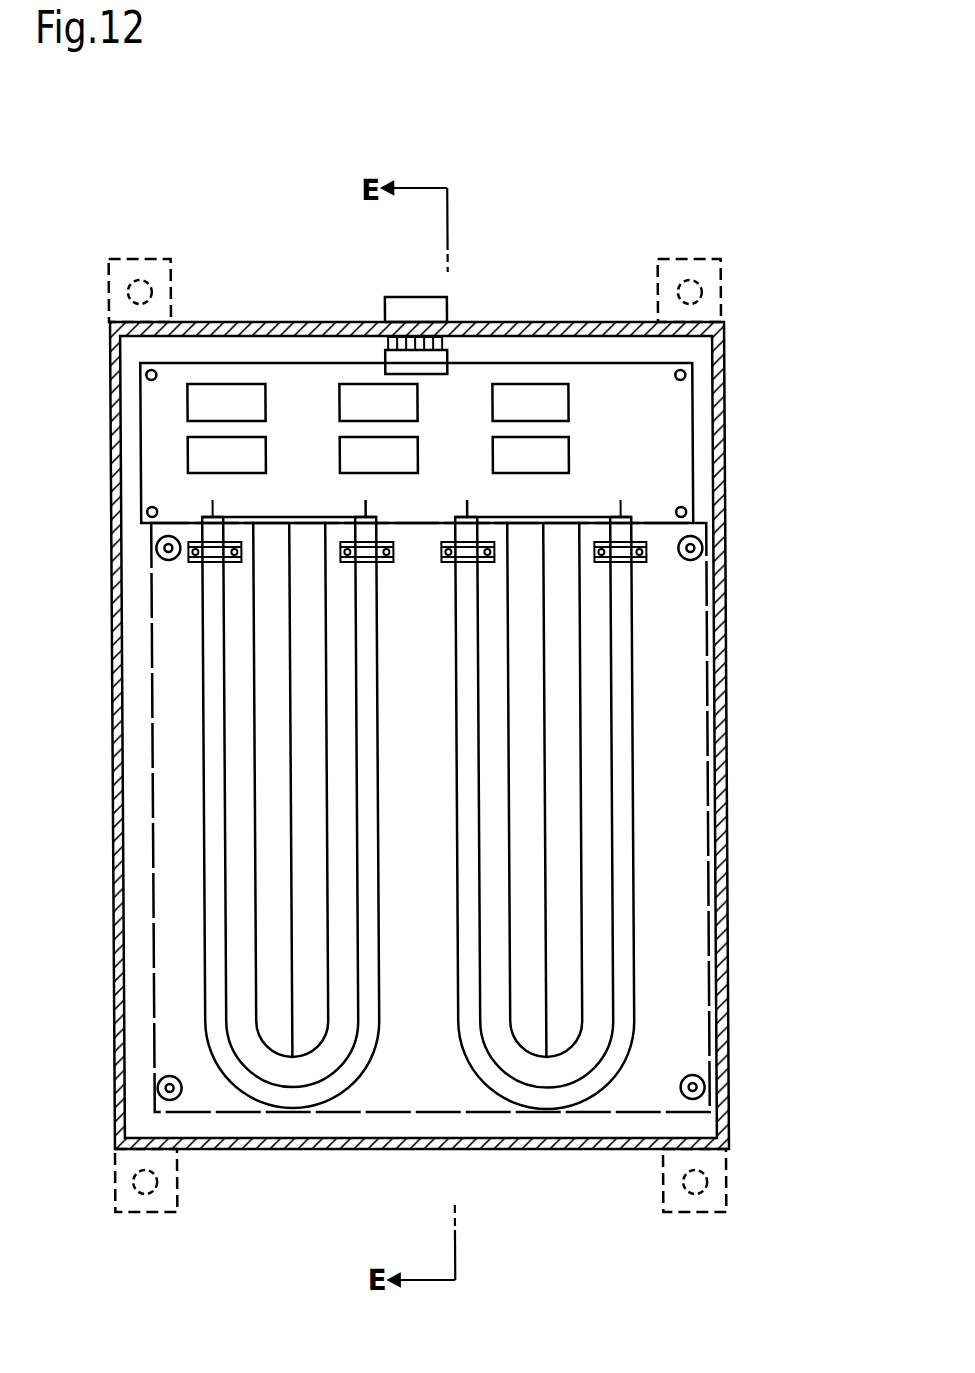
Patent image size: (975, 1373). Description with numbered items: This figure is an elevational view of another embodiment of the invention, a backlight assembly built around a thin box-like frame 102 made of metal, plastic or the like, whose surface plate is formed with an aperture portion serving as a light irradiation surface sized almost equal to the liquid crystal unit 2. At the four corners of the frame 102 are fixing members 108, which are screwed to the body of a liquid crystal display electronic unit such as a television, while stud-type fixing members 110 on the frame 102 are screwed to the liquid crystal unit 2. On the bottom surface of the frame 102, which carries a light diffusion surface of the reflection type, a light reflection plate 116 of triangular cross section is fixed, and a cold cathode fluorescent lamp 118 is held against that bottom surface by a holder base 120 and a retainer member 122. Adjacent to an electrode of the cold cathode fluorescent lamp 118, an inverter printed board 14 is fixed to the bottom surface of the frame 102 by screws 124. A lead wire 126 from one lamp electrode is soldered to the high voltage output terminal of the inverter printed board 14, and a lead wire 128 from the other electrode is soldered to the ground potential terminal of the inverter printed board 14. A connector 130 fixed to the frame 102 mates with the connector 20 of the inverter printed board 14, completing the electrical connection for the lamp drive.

The liquid crystal unit 2 is at (572, 1112).
The inverter printed board 14 is at (612, 377).
The connector of the inverter printed board 20 is at (388, 352).
The frame 102 is at (723, 950).
The fixing member 108 is at (157, 262).
The fixing member 110 is at (697, 550).
The light reflection plate 116 is at (565, 752).
The cold cathode fluorescent lamp 118 is at (622, 860).
The holder base 120 is at (642, 563).
The retainer member 122 is at (642, 523).
The screw 124 is at (146, 372).
The lead wire 126 is at (210, 503).
The lead wire 128 is at (363, 505).
The connector 130 is at (447, 303).